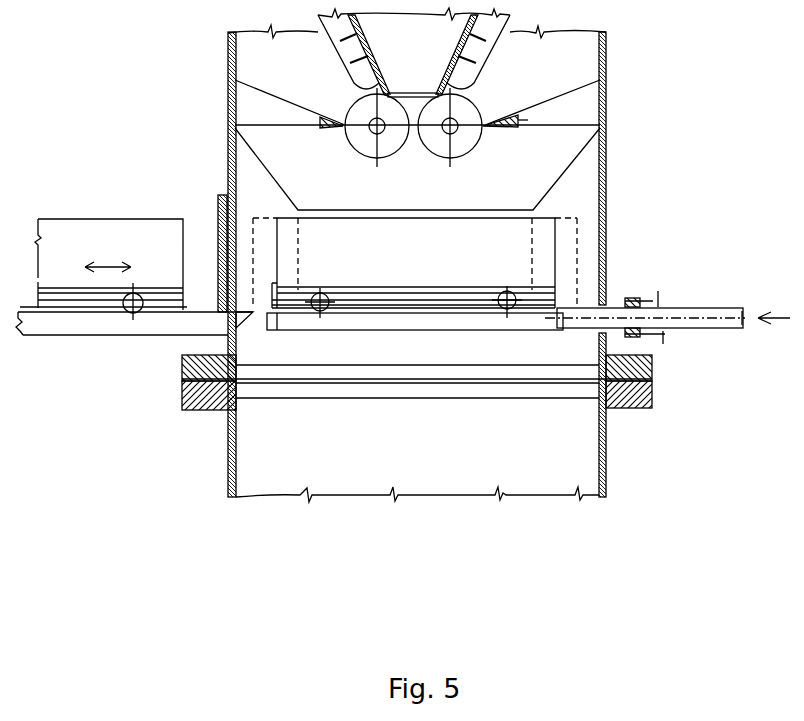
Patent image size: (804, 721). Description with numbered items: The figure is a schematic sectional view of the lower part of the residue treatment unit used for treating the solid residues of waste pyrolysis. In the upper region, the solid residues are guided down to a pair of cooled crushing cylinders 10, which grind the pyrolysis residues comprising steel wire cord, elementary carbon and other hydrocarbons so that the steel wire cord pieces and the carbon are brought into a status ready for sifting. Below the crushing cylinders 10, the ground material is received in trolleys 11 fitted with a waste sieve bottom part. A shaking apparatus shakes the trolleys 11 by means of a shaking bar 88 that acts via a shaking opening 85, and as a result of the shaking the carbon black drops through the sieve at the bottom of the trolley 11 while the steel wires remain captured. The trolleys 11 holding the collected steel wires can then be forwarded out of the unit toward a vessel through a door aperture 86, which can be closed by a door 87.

The crushing cylinders 10 is at (483, 160).
The trolleys 11 is at (78, 219).
The shaking opening 85 is at (635, 298).
The door aperture 86 is at (236, 227).
The door 87 is at (217, 225).
The shaking bar 88 is at (700, 308).